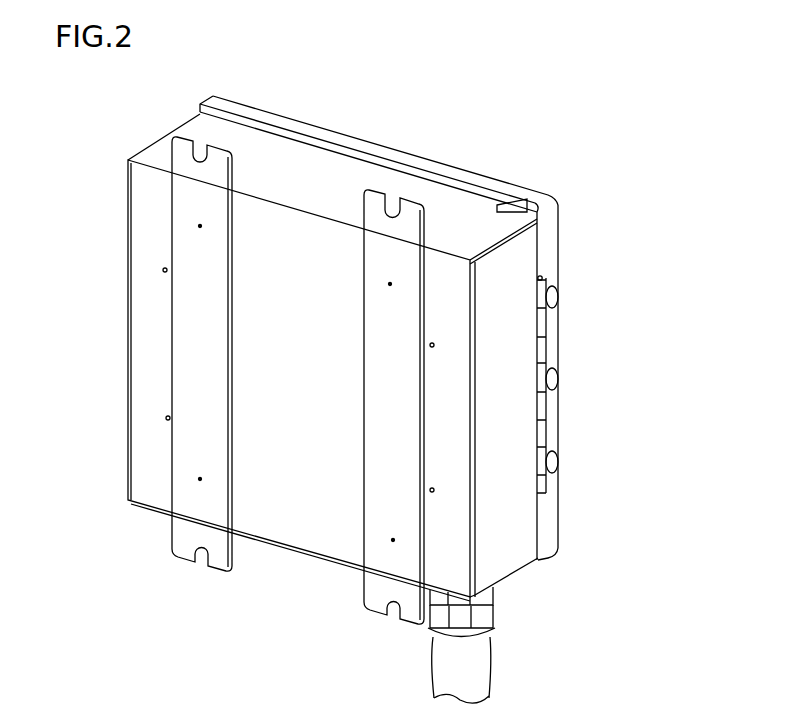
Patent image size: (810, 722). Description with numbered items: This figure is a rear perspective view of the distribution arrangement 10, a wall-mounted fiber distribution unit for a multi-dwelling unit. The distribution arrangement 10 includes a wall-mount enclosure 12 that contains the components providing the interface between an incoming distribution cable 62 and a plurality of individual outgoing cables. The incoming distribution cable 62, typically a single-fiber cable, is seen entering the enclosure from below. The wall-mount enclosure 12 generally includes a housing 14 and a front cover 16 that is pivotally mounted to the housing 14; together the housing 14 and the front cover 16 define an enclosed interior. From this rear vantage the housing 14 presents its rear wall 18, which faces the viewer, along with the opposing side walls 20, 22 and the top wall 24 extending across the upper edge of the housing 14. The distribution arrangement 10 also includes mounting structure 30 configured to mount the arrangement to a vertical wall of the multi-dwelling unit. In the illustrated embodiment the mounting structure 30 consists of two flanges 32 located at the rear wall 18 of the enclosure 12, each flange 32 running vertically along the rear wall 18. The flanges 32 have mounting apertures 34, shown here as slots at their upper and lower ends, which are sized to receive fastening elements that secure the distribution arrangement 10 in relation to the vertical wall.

The distribution arrangement 10 is at (662, 266).
The wall-mount enclosure 12 is at (357, 313).
The housing 14 is at (438, 197).
The front cover 16 is at (560, 247).
The rear wall 18 is at (298, 430).
The side wall 20 is at (515, 422).
The side wall 22 is at (150, 147).
The top wall 24 is at (287, 148).
The mounting structure 30 is at (292, 381).
The flange 32 is at (187, 343).
The mounting aperture 34 is at (200, 143).
The incoming distribution cable 62 is at (487, 670).